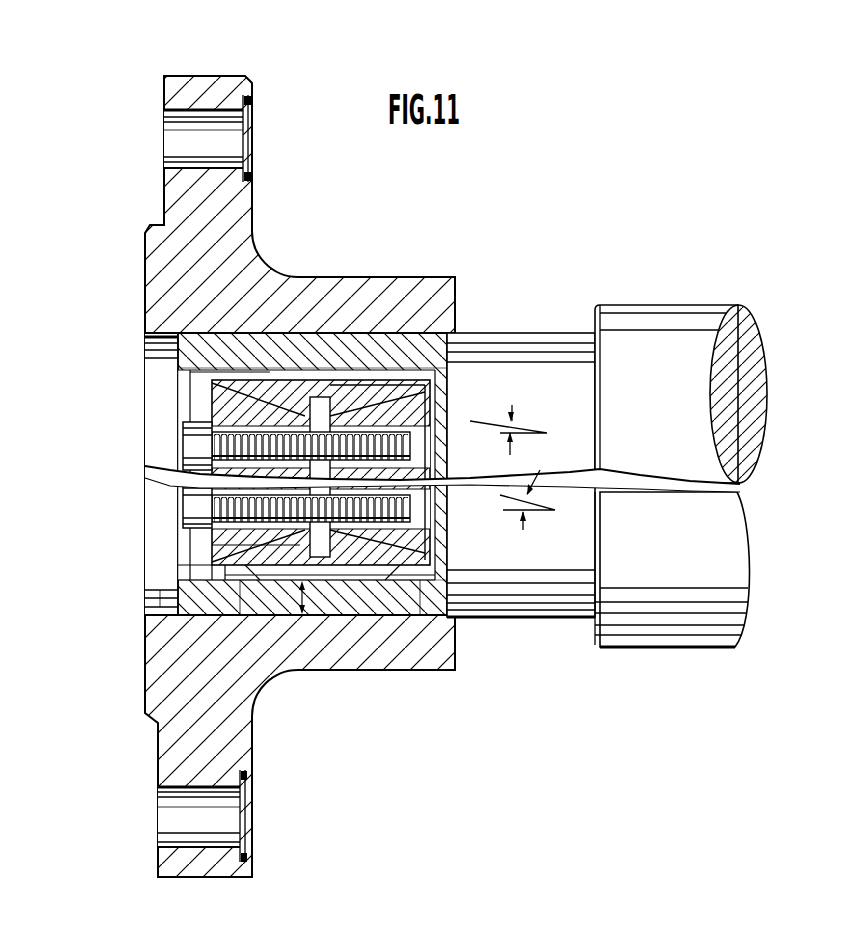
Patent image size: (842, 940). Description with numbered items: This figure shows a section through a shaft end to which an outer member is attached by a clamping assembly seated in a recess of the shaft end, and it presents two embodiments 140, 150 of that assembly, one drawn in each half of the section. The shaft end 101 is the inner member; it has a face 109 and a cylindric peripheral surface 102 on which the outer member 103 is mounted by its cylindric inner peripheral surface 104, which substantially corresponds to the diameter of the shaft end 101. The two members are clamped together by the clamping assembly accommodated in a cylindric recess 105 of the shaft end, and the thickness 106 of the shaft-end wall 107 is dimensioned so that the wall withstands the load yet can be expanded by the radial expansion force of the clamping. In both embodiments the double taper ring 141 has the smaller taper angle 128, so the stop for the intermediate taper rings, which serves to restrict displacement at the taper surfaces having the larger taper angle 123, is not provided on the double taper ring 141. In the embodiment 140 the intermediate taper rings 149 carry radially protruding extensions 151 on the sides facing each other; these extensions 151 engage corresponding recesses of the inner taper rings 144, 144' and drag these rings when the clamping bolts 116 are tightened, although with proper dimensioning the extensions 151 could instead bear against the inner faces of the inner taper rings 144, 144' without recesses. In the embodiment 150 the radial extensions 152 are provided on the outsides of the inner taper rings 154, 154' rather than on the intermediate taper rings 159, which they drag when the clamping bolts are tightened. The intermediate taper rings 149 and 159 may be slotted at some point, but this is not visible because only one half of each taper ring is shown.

The shaft end 101 is at (562, 590).
The cylindric peripheral surface 102 is at (487, 617).
The outer member 103 is at (247, 735).
The cylindric inner peripheral surface 104 is at (193, 612).
The cylindric recess 105 is at (202, 572).
The thickness 106 is at (312, 616).
The shaft-end wall 107 is at (340, 600).
The face 109 is at (178, 590).
The clamping bolts 116 is at (195, 497).
The larger taper angle 123 is at (525, 525).
The smaller taper angle 128 is at (513, 415).
The embodiment 140 is at (122, 413).
The double taper ring 141 is at (317, 372).
The inner taper ring 144 is at (266, 466).
The inner taper ring 144' is at (413, 470).
The intermediate taper rings 149 is at (265, 383).
The embodiment 150 is at (112, 557).
The radially protruding extensions 151 is at (205, 432).
The extensions 152 is at (222, 555).
The inner taper ring 154 is at (194, 521).
The inner taper ring 154' is at (415, 533).
The intermediate taper rings 159 is at (263, 616).